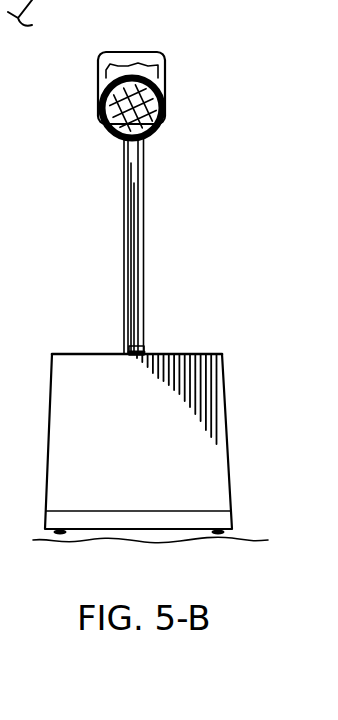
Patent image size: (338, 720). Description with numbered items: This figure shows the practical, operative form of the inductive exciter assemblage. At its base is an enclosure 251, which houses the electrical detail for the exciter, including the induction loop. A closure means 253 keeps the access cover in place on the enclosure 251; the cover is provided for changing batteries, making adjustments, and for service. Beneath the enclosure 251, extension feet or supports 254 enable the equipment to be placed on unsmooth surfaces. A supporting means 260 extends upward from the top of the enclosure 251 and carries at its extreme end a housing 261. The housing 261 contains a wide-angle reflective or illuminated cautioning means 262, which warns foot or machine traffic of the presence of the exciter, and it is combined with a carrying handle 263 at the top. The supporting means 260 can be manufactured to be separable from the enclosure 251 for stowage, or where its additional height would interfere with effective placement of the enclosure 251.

The enclosure 251 is at (221, 481).
The closure means 253 is at (137, 348).
The extension feet 254 is at (210, 540).
The supporting means 260 is at (148, 289).
The housing 261 is at (172, 121).
The cautioning means 262 is at (116, 138).
The carrying handle 263 is at (153, 73).